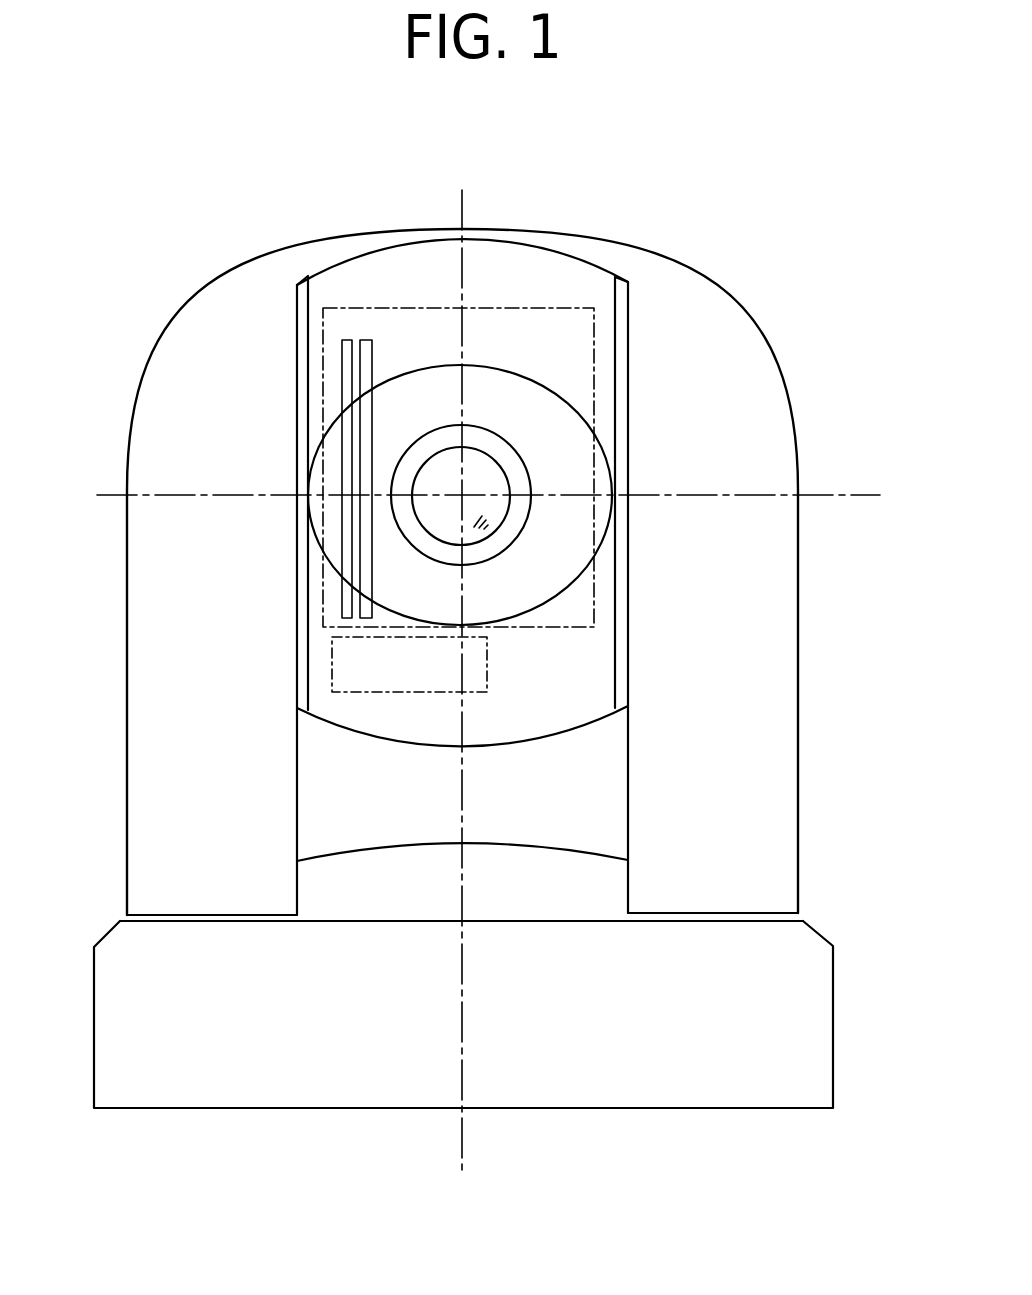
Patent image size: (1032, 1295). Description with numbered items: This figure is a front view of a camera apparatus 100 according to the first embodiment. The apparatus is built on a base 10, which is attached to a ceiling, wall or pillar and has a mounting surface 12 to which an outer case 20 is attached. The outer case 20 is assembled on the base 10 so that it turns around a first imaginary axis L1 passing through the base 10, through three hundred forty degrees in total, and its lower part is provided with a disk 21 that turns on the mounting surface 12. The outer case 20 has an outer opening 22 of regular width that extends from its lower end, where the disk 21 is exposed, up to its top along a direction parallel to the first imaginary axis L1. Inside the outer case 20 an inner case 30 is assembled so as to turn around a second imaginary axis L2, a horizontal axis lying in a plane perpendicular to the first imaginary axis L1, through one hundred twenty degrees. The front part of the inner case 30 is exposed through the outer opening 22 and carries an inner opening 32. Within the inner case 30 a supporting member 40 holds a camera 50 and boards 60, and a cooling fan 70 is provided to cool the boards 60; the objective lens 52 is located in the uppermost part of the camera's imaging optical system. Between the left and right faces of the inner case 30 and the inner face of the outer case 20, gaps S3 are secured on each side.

The camera apparatus 100 is at (660, 181).
The base 10 is at (833, 980).
The mounting surface 12 is at (692, 918).
The outer case 20 is at (790, 405).
The disk 21 is at (572, 848).
The outer opening 22 is at (620, 635).
The inner case 30 is at (597, 266).
The inner opening 32 is at (493, 433).
The supporting member 40 is at (601, 326).
The camera 50 is at (490, 487).
The objective lens 52 is at (493, 513).
The boards 60 is at (365, 338).
The cooling fan 70 is at (387, 693).
The first imaginary axis L1 is at (463, 212).
The second imaginary axis L2 is at (880, 494).
The gap S3 is at (300, 540).